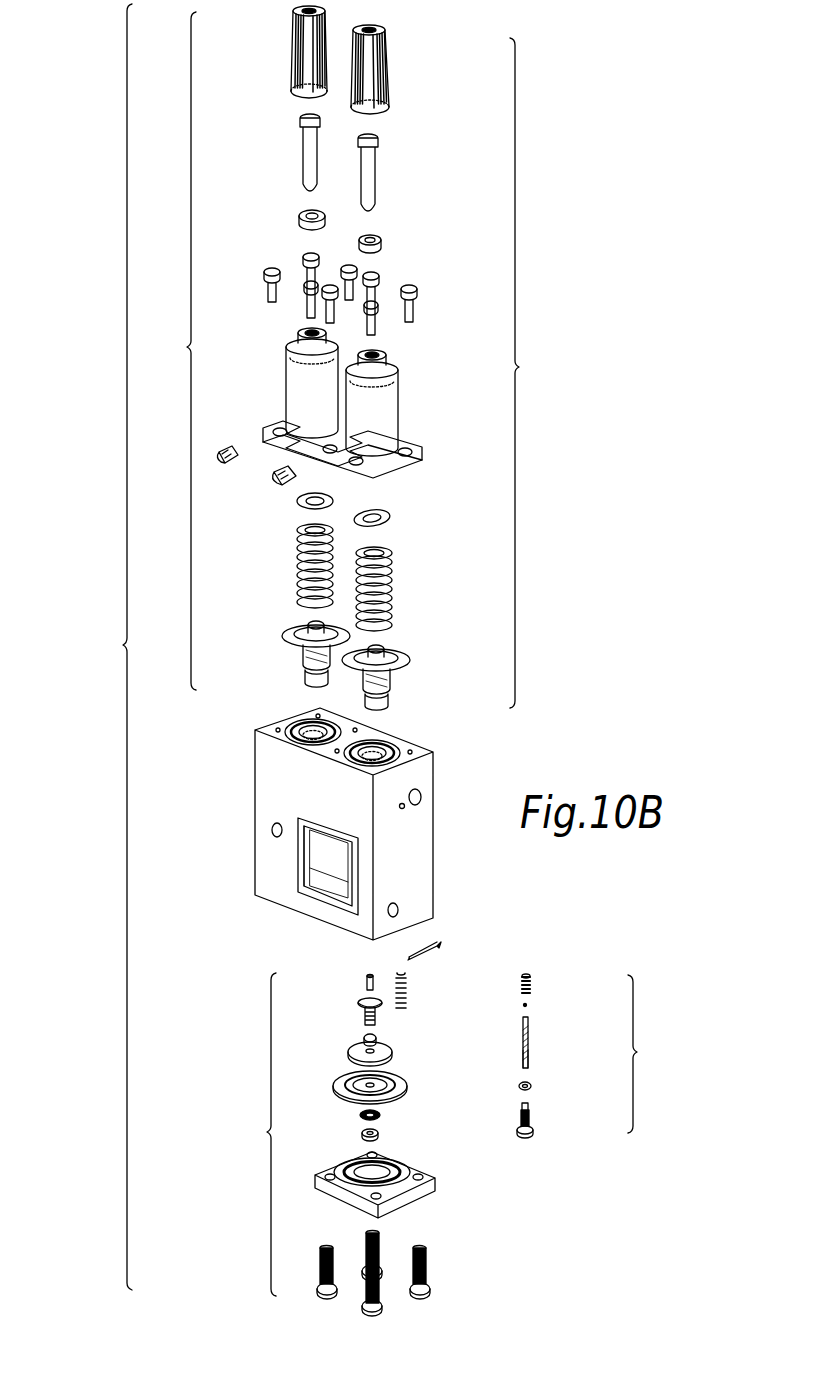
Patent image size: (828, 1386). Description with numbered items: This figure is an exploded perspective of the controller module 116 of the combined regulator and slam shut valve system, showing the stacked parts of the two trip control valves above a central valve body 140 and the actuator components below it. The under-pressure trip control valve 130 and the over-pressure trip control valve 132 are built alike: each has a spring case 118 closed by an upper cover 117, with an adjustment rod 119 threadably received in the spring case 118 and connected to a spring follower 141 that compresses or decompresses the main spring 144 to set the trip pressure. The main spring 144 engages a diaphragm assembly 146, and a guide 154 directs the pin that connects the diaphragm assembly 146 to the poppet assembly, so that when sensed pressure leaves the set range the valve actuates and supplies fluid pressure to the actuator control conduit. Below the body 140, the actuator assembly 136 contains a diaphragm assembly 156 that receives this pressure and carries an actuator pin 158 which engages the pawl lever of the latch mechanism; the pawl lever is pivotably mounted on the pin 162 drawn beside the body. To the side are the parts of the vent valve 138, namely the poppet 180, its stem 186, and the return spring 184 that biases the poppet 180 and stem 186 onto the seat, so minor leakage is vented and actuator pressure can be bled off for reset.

The controller module 116 is at (108, 647).
The upper cover 117 is at (390, 70).
The spring case 118 is at (293, 382).
The adjustment rod 119 is at (377, 178).
The under-pressure trip control valve 130 is at (171, 351).
The over-pressure trip control valve 132 is at (538, 373).
The actuator assembly 136 is at (251, 1134).
The vent valve 138 is at (654, 1054).
The valve body 140 is at (398, 912).
The spring follower 141 is at (392, 520).
The main spring 144 is at (395, 578).
The diaphragm assembly 146 is at (410, 660).
The guide 154 is at (392, 678).
The diaphragm assembly 156 is at (408, 1086).
The actuator pin 158 is at (365, 983).
The pin 162 is at (430, 958).
The poppet 180 is at (530, 1035).
The return spring 184 is at (532, 985).
The stem 186 is at (530, 1055).